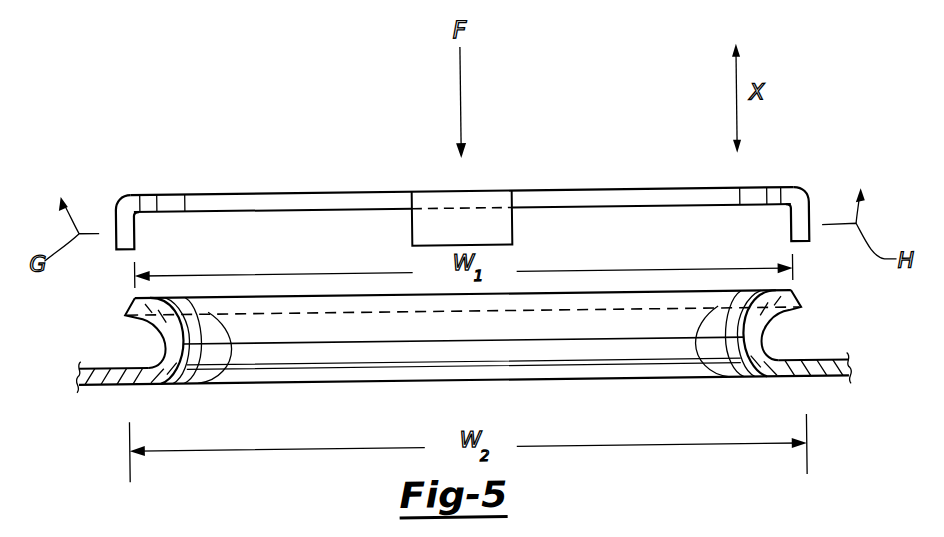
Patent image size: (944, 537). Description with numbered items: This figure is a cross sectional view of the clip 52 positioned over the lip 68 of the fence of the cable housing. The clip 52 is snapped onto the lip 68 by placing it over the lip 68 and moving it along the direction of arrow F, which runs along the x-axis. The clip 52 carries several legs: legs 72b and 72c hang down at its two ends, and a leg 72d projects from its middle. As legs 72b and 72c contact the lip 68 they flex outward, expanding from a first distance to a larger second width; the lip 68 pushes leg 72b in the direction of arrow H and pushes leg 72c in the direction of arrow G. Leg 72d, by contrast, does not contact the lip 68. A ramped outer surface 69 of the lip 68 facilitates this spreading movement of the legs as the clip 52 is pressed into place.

The clip 52 is at (258, 188).
The leg 72b is at (803, 217).
The leg 72c is at (123, 192).
The leg 72d is at (480, 222).
The lip 68 is at (797, 316).
The ramped outer surface 69 is at (137, 315).